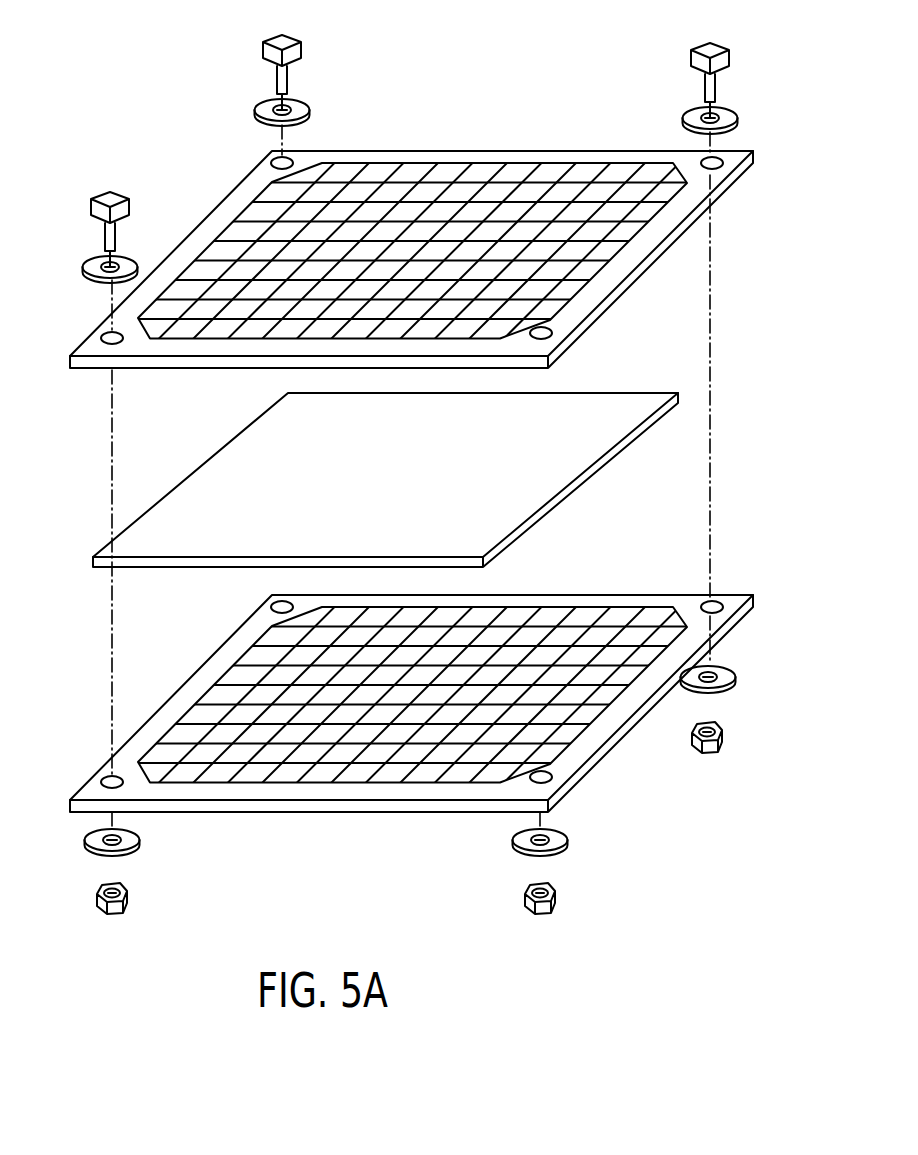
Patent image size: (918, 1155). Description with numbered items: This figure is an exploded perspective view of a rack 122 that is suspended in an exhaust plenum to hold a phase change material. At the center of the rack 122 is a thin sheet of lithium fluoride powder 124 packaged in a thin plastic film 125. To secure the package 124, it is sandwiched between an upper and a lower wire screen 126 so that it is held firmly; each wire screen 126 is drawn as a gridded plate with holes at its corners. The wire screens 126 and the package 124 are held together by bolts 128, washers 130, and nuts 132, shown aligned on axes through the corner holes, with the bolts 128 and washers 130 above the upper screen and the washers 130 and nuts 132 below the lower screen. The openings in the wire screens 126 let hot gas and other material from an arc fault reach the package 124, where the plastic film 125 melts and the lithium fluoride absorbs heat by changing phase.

The rack 122 is at (738, 404).
The thin sheet of lithium fluoride powder 124 is at (558, 503).
The thin plastic film 125 is at (627, 403).
The wire screen 126 is at (480, 150).
The bolt 128 is at (291, 44).
The washer 130 is at (300, 112).
The nut 132 is at (120, 882).